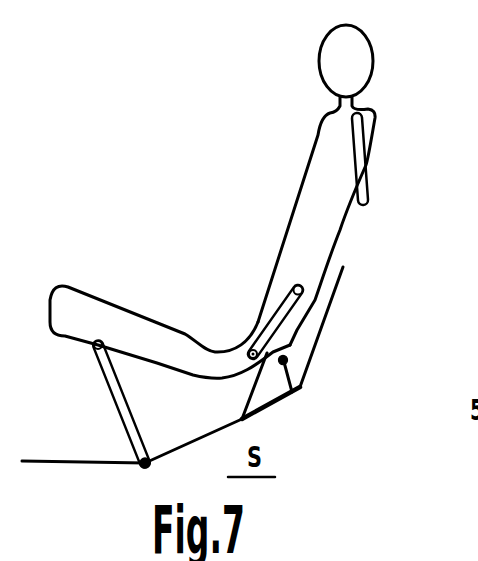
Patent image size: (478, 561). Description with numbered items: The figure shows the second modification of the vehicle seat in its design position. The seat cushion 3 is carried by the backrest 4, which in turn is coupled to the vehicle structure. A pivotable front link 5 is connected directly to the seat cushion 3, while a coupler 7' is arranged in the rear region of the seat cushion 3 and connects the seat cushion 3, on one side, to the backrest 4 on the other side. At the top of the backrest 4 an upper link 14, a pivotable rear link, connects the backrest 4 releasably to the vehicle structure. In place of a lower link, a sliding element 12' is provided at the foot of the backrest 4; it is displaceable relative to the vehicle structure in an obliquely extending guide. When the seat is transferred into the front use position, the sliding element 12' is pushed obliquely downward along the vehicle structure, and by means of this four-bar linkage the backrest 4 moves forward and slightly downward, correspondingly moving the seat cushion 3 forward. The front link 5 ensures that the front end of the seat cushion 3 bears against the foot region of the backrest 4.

The seat cushion 3 is at (140, 337).
The backrest 4 is at (305, 218).
The front link 5 is at (118, 396).
The coupler 7' is at (235, 290).
The sliding element 12' is at (327, 343).
The upper link 14 is at (370, 143).